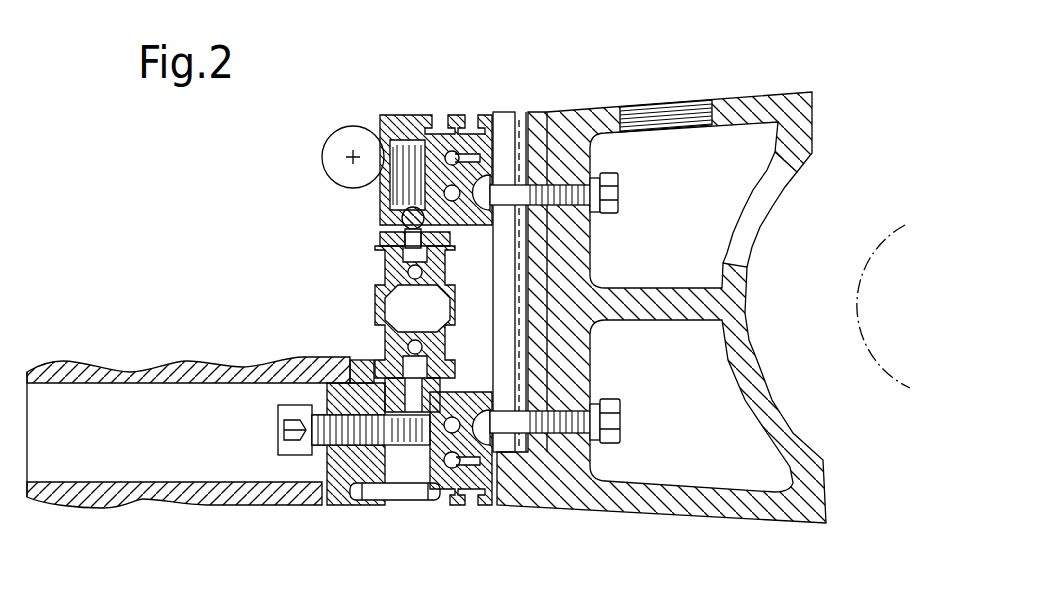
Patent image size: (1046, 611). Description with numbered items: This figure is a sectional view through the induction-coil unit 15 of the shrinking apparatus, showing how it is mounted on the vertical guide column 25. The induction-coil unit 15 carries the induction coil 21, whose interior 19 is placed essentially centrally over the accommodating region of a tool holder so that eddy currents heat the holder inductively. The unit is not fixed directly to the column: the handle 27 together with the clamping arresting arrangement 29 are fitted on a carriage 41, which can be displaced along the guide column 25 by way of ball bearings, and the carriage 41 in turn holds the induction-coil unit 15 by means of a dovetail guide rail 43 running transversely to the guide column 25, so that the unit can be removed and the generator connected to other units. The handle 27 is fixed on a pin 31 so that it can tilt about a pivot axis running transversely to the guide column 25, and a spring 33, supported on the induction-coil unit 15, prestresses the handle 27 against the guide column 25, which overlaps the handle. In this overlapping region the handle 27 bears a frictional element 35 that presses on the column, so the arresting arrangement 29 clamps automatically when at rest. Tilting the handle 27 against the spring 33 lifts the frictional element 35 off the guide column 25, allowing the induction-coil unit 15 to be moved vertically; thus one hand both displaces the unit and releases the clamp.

The induction-coil unit 15 is at (766, 88).
The interior of the induction coil 19 is at (858, 312).
The induction coil 21 is at (816, 263).
The guide column 25 is at (378, 245).
The handle 27 is at (203, 500).
The clamping arresting arrangement 29 is at (362, 343).
The pin 31 is at (405, 505).
The spring 33 is at (320, 462).
The frictional element 35 is at (350, 358).
The carriage 41 is at (391, 110).
The dovetail guide rail 43 is at (507, 125).